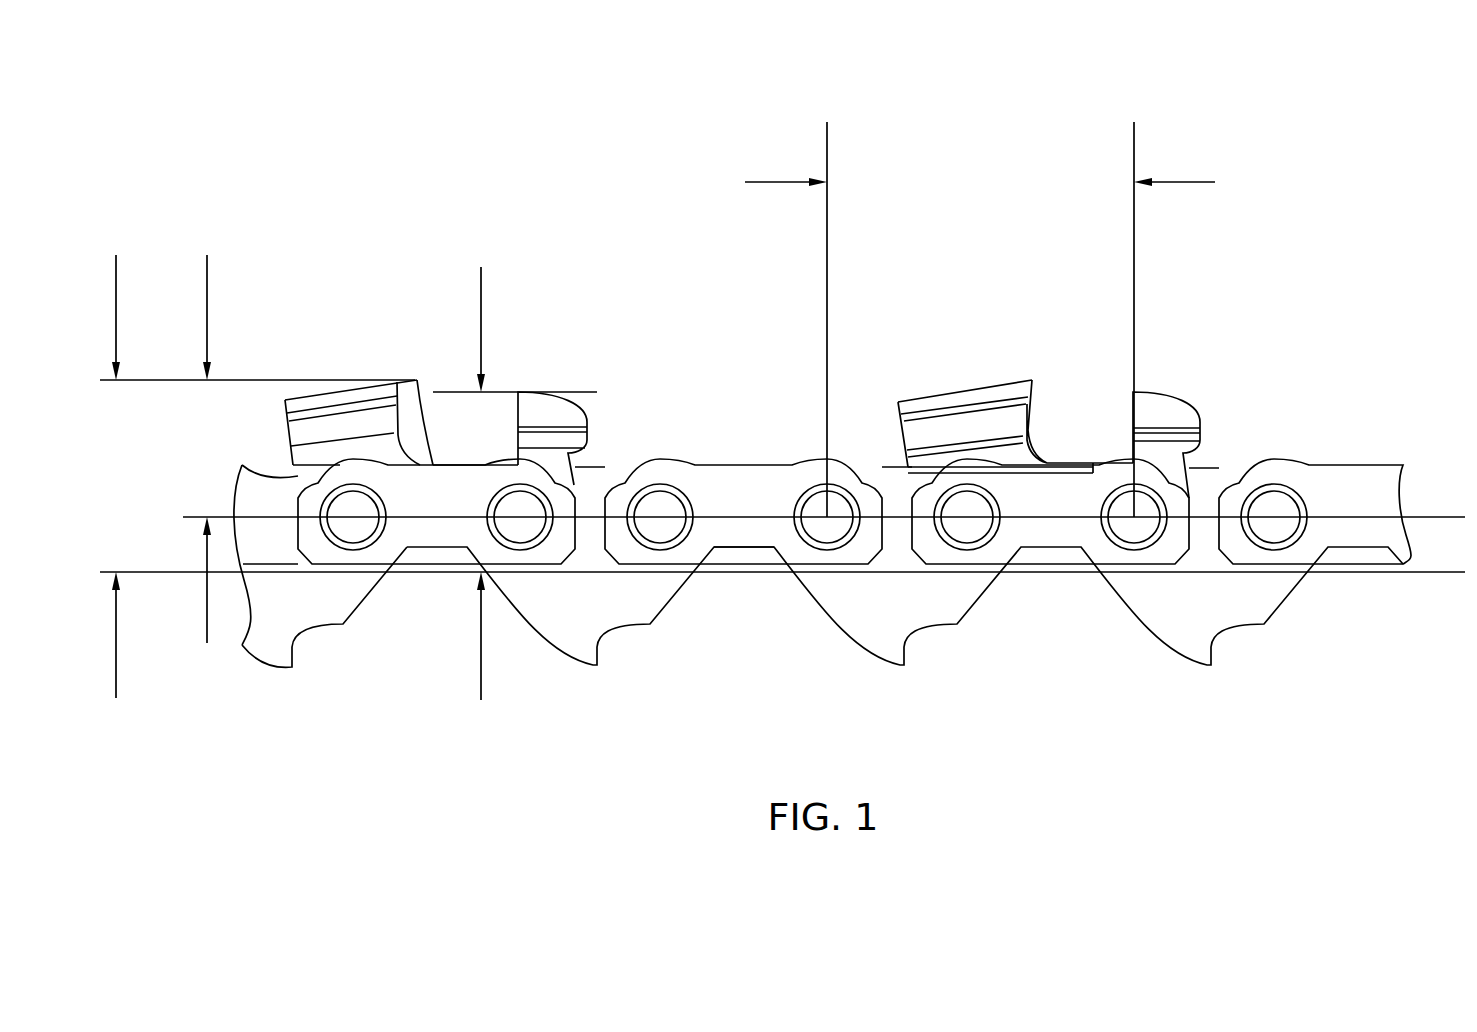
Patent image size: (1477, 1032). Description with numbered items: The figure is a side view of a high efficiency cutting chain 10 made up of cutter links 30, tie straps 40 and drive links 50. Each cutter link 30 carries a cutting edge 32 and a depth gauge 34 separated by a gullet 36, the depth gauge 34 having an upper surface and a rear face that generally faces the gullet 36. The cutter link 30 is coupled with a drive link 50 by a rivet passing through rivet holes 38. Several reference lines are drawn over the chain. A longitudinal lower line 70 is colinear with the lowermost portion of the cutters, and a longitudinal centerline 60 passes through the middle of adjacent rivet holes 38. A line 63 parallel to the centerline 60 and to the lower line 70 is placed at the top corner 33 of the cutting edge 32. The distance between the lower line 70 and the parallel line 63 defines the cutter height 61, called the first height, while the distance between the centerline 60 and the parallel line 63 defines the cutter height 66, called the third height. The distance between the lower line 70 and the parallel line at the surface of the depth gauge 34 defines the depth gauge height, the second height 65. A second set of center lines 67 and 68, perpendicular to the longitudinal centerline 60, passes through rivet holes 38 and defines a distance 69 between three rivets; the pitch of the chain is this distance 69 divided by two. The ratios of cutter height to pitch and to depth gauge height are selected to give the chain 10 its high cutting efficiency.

The high efficiency cutting chain 10 is at (420, 207).
The cutter link 30 is at (302, 440).
The cutting edge 32 is at (395, 385).
The top corner 33 is at (415, 380).
The depth gauge 34 is at (538, 408).
The gullet 36 is at (1095, 440).
The rivet holes 38 is at (527, 510).
The tie straps 40 is at (760, 533).
The drive links 50 is at (555, 637).
The longitudinal centerline 60 is at (1432, 517).
The cutter height 61 is at (114, 264).
The parallel line 63 is at (173, 380).
The second height 65 is at (480, 276).
The cutter height 66 is at (205, 278).
The center line 67 is at (825, 232).
The center line 68 is at (1136, 232).
The distance 69 is at (770, 182).
The longitudinal lower line 70 is at (283, 573).